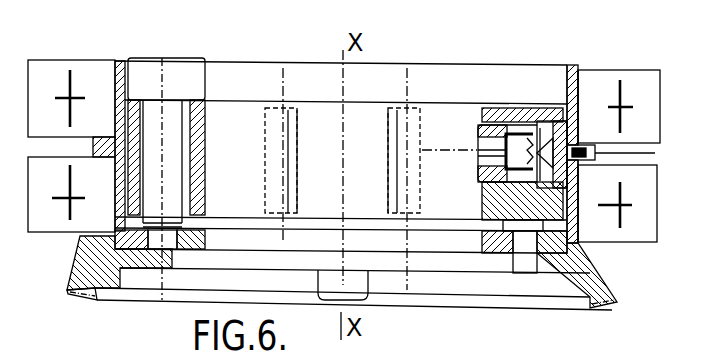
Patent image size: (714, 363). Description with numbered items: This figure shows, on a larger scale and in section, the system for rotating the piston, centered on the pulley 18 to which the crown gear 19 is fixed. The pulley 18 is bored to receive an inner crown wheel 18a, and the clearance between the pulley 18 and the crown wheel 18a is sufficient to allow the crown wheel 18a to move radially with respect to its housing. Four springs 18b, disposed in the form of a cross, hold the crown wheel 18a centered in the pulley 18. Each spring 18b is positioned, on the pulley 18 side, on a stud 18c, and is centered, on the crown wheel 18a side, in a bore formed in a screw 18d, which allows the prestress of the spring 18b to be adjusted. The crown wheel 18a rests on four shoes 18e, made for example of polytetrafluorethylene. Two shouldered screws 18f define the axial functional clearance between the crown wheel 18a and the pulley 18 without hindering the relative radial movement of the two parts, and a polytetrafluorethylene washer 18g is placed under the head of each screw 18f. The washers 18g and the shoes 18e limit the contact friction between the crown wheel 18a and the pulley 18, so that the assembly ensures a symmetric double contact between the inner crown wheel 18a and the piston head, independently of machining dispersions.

The pulley 18 is at (550, 243).
The inner crown wheel 18a is at (538, 210).
The spring 18b is at (538, 120).
The stud 18c is at (565, 143).
The screw 18d is at (500, 132).
The shoe 18e is at (515, 225).
The shouldered screw 18f is at (163, 117).
The polytetrafluorethylene washer 18g is at (192, 98).
The crown gear 19 is at (590, 282).